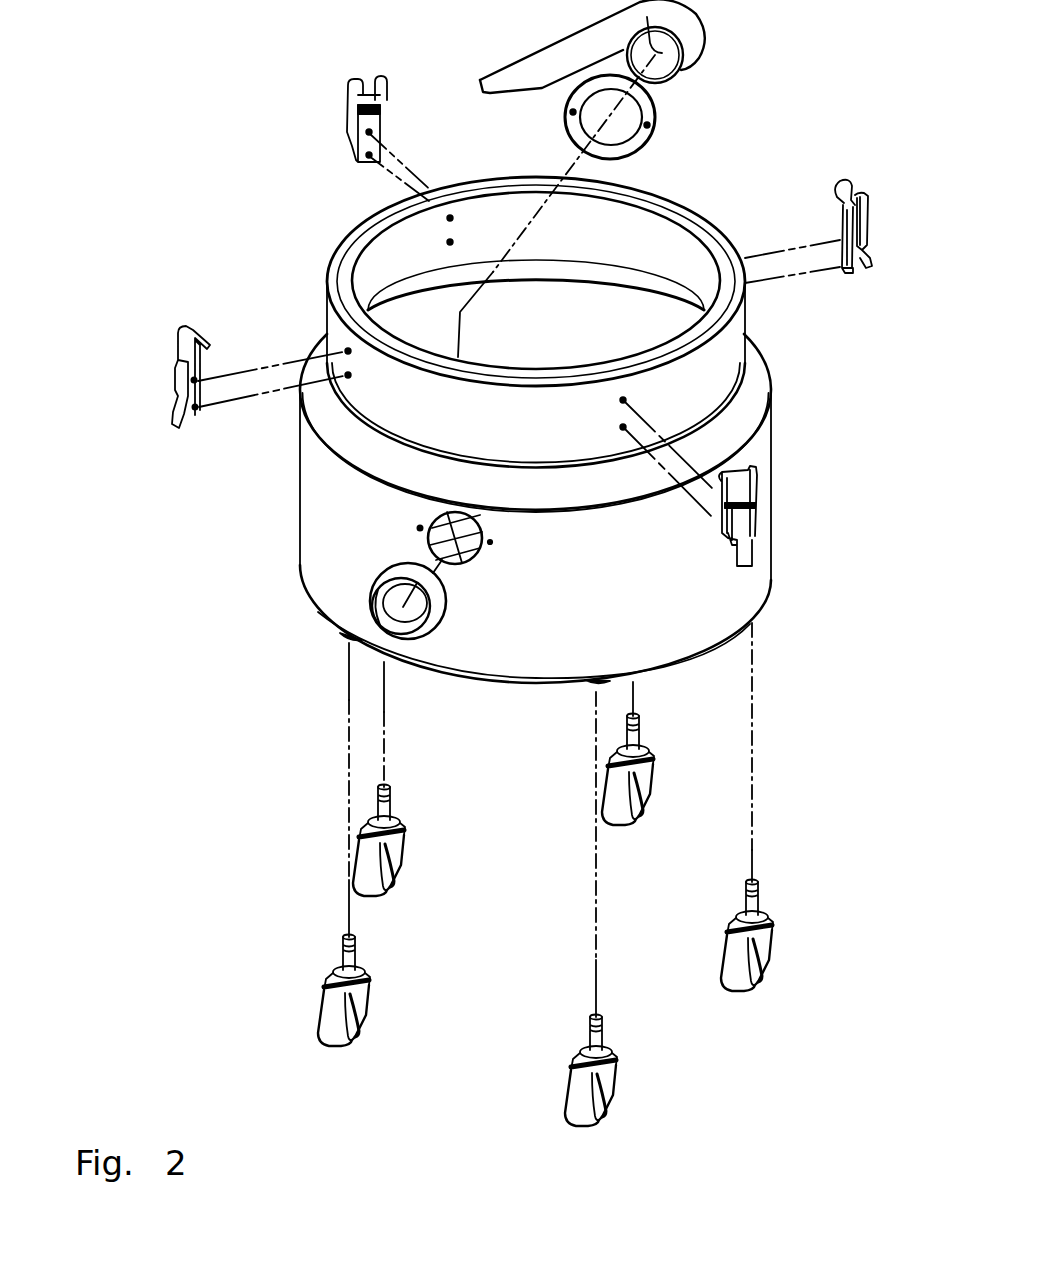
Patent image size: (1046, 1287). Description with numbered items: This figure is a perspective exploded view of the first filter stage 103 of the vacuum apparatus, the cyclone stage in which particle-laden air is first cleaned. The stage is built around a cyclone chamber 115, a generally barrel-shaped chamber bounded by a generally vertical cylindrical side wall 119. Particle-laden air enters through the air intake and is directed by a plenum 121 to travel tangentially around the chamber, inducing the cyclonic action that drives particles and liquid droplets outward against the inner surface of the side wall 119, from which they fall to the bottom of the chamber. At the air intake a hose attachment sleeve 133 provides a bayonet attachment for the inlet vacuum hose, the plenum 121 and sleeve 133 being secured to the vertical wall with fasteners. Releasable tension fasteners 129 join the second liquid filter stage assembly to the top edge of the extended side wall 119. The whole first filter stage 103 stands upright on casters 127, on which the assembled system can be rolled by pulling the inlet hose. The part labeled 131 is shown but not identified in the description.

The first filter stage 103 is at (826, 527).
The cyclone chamber 115 is at (627, 320).
The cylindrical side wall 119 is at (767, 451).
The plenum 121 is at (698, 43).
The casters 127 is at (768, 937).
The releasable tension fasteners 129 is at (180, 380).
The gasket ring 131 is at (645, 143).
The hose attachment sleeve 133 is at (442, 613).